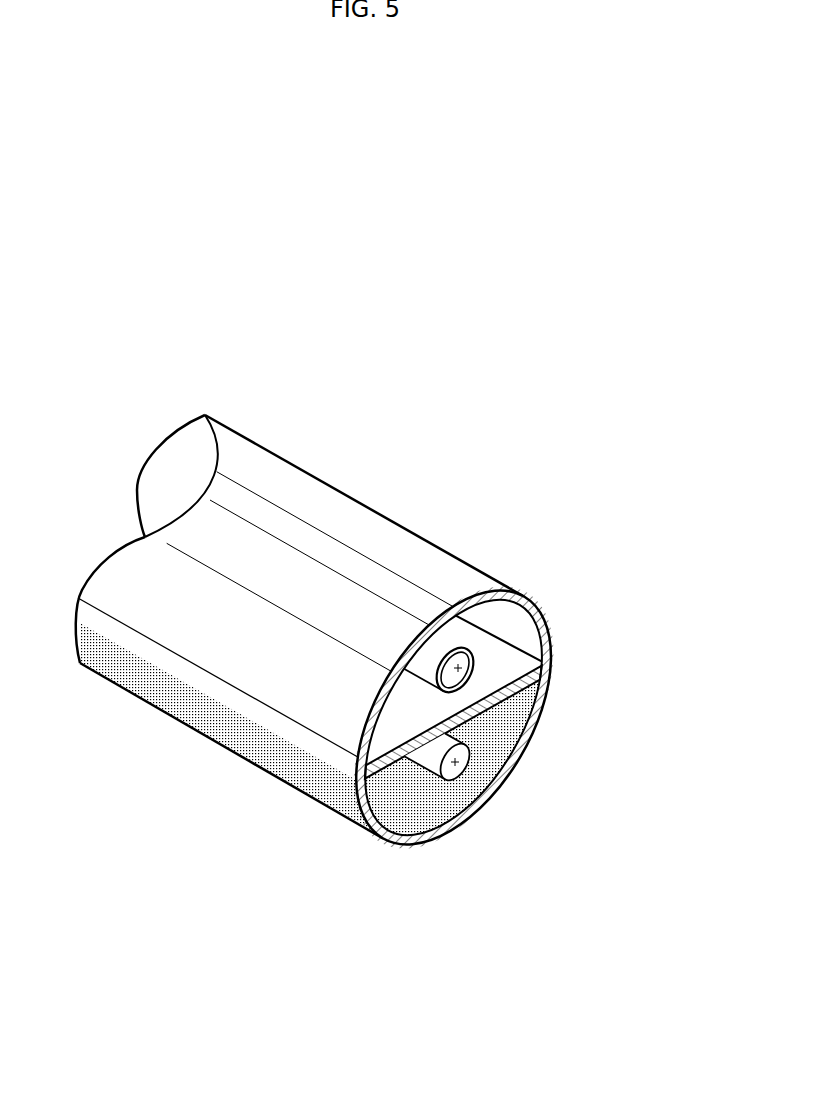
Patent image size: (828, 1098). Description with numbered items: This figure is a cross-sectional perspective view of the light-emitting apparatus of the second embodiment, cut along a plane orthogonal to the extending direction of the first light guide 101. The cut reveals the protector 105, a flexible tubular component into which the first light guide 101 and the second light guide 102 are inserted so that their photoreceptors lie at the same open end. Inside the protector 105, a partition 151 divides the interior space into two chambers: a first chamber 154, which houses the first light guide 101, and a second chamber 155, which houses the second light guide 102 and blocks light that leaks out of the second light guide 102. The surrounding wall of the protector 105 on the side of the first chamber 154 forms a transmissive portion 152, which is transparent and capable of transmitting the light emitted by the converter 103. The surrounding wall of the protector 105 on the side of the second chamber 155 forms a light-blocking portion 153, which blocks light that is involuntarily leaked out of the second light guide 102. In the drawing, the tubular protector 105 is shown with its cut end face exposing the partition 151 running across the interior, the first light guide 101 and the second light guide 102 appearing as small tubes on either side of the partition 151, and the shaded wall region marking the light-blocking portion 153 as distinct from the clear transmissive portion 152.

The protector 105 is at (332, 498).
The partition 151 is at (510, 647).
The transmissive portion 152 is at (405, 562).
The light-blocking portion 153 is at (167, 698).
The first chamber 154 is at (398, 697).
The second chamber 155 is at (413, 800).
The converter 103 is at (447, 643).
The first light guide 101 is at (462, 667).
The second light guide 102 is at (459, 761).